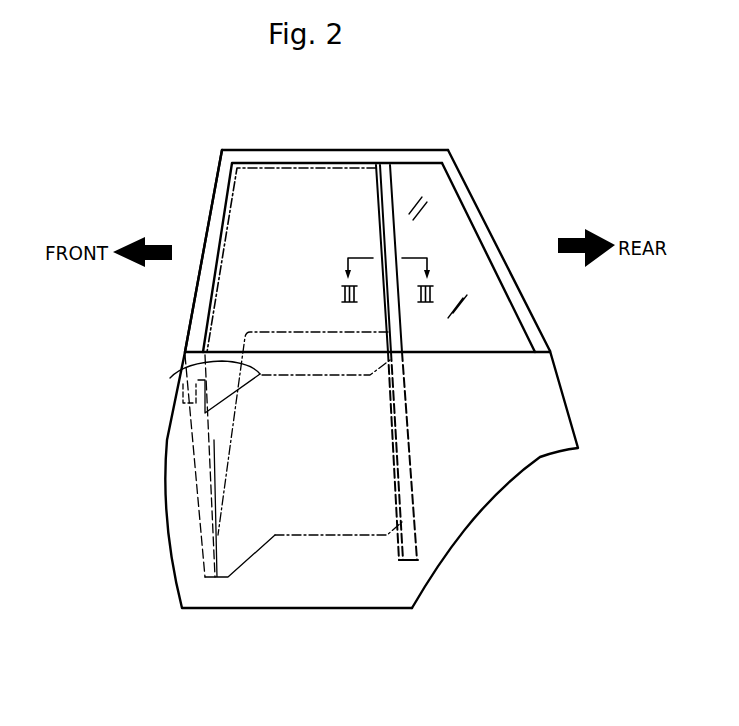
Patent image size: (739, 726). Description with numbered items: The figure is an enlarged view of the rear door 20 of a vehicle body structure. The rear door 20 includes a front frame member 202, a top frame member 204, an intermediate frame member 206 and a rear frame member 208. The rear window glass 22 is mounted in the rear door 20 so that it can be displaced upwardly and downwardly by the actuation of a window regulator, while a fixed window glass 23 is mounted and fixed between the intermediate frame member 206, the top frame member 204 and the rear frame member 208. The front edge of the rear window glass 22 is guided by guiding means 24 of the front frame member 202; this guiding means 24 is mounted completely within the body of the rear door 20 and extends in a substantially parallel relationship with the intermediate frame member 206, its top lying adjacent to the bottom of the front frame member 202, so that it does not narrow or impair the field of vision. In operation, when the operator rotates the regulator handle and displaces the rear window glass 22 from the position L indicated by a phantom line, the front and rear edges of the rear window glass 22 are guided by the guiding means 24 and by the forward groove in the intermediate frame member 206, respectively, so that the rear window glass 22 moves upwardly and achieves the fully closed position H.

The rear door 20 is at (333, 593).
The rear window glass 22 is at (320, 170).
The fixed window glass 23 is at (480, 282).
The guiding means 24 is at (210, 580).
The front frame member 202 is at (213, 223).
The top frame member 204 is at (387, 157).
The intermediate frame member 206 is at (392, 213).
The rear frame member 208 is at (476, 208).
The fully closed position H is at (170, 378).
The position L is at (363, 538).